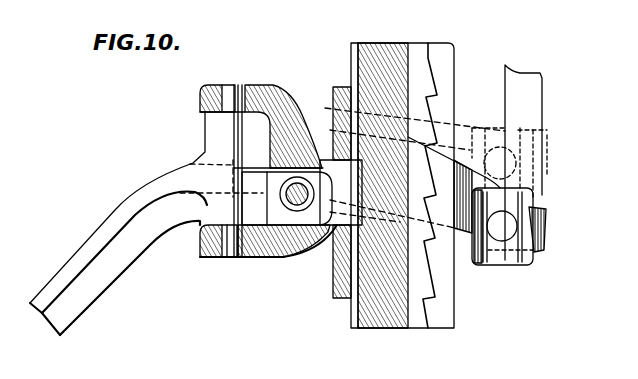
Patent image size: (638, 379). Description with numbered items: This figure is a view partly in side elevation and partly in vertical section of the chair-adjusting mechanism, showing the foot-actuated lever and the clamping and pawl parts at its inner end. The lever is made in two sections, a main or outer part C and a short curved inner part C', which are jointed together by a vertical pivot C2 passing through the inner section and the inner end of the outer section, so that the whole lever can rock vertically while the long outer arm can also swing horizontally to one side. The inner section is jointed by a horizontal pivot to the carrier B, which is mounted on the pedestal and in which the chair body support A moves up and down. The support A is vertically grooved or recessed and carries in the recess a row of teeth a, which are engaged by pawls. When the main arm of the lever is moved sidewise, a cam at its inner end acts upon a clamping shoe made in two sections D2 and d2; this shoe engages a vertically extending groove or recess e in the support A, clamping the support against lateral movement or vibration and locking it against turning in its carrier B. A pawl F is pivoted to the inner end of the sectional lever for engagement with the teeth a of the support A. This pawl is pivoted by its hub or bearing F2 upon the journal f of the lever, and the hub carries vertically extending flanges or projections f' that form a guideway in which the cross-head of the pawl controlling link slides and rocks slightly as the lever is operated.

The main or outer part of foot-actuated lever C is at (146, 223).
The vertical pivot C2 is at (240, 70).
The short curved inner part of foot-actuated lever C' is at (390, 170).
The clamping shoe section D2 is at (282, 210).
The clamping shoe section d2 is at (313, 193).
The carrier B is at (332, 278).
The vertically extending groove or recess e is at (353, 314).
The support A is at (383, 318).
The row of teeth a is at (430, 185).
The pawl F is at (500, 162).
The hub or bearing of pawl F2 is at (506, 256).
The vertically extending flanges or projections f' is at (505, 238).
The journal f is at (502, 226).